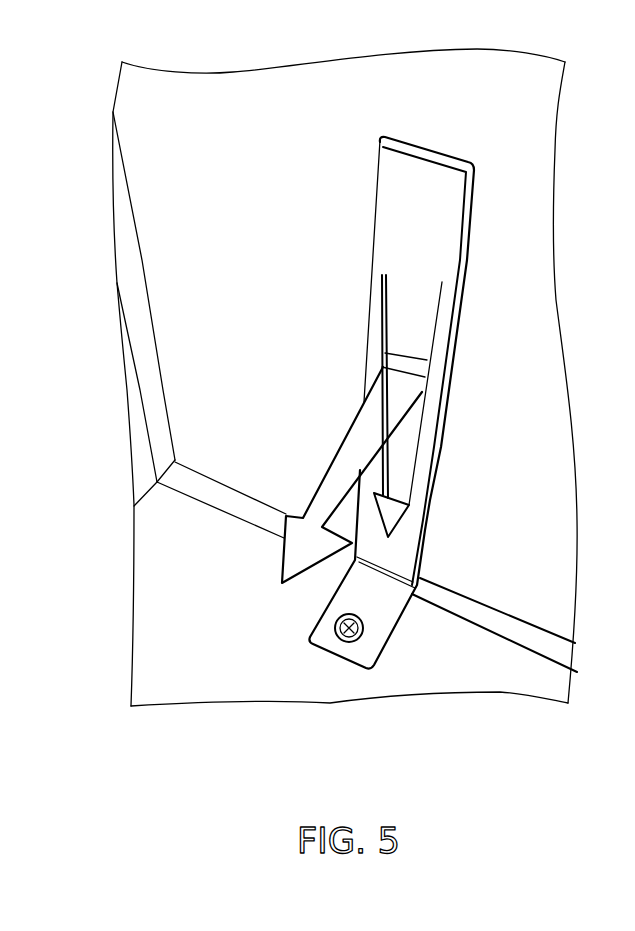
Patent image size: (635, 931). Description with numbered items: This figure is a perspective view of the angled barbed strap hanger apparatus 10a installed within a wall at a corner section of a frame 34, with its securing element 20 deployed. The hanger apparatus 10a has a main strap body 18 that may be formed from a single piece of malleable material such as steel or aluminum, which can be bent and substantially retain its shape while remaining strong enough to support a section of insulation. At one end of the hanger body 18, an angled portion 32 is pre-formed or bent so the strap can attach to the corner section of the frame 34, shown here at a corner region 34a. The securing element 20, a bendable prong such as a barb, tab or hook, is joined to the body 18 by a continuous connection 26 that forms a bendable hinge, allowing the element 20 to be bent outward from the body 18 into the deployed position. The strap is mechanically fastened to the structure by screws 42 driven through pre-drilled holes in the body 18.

The angled barbed strap hanger apparatus 10a is at (543, 235).
The main strap body 18 is at (425, 463).
The securing element 20 is at (296, 546).
The continuous connection 26 is at (378, 345).
The angled portion 32 is at (451, 615).
The frame 34 is at (151, 398).
The shelf ledge 34a is at (224, 450).
The screws 42 is at (348, 642).